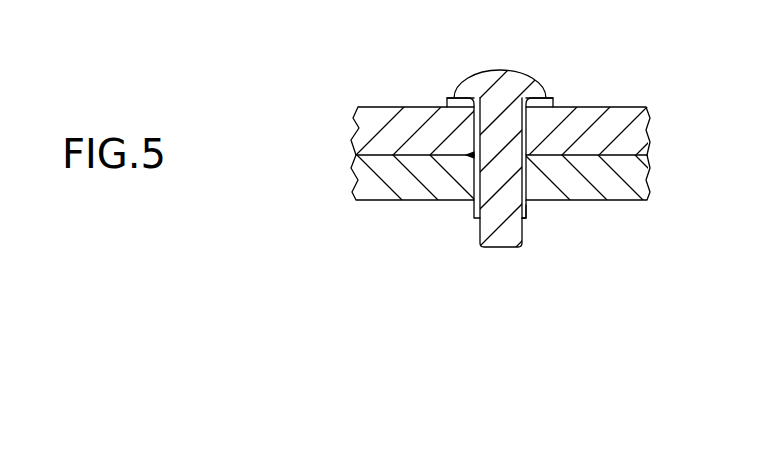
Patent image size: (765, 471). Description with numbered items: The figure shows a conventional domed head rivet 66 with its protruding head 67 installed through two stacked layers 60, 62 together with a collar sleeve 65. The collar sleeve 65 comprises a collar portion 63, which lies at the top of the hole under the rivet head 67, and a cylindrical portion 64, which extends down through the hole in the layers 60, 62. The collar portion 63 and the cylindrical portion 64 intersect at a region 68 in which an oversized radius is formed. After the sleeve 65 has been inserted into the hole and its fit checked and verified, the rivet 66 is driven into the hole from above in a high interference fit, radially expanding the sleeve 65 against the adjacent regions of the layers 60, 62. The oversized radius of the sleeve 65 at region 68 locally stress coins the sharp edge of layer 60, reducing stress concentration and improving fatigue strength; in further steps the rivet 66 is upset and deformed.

The layer 60 is at (362, 132).
The layer 62 is at (367, 181).
The collar portion 63 is at (553, 97).
The cylindrical portion 64 is at (528, 214).
The collar sleeve 65 is at (467, 176).
The domed head rivet 66 is at (514, 240).
The protruding head 67 is at (488, 70).
The region 68 is at (449, 104).